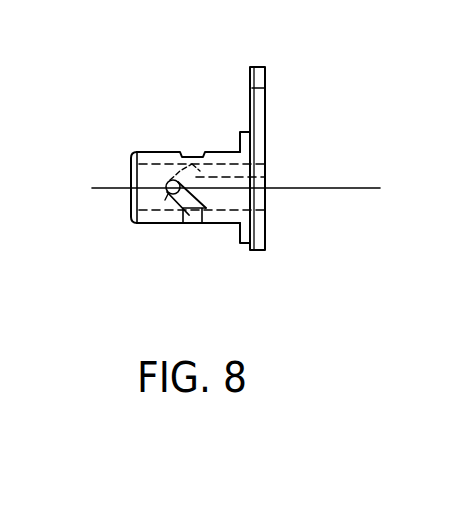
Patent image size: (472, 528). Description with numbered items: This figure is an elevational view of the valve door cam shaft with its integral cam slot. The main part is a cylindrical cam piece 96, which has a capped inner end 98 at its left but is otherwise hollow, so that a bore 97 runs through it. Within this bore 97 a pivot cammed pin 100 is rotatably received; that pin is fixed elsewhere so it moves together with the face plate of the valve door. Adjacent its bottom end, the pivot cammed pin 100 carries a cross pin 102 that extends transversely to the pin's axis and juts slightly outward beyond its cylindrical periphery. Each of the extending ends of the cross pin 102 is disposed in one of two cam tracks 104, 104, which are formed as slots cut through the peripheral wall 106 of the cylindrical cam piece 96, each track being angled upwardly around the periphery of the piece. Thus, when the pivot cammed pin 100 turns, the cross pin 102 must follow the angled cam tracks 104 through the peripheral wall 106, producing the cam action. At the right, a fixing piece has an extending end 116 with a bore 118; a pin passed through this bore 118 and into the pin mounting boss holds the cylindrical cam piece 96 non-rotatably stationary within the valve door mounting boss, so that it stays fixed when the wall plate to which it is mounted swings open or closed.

The cylindrical cam piece 96 is at (210, 152).
The bore 97 is at (129, 197).
The capped inner end 98 is at (131, 168).
The pivot cammed pin 100 is at (130, 180).
The cross pin 102 is at (170, 175).
The cam tracks 104 is at (268, 177).
The peripheral wall 106 is at (156, 220).
The extending end 116 is at (266, 76).
The bore 118 is at (268, 88).